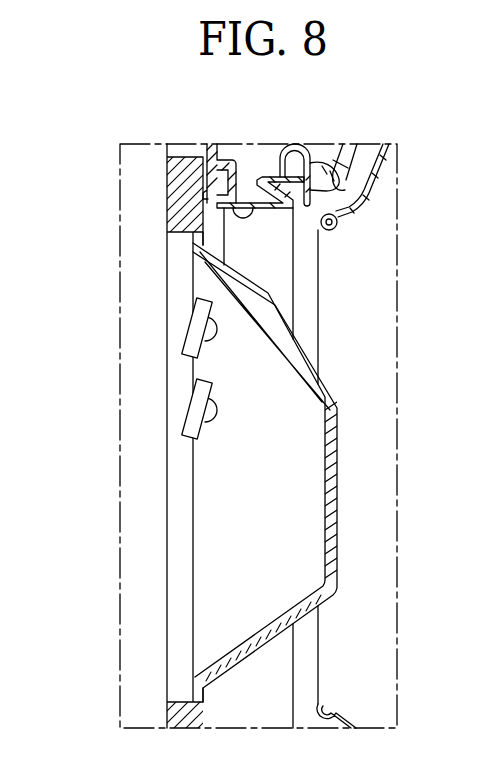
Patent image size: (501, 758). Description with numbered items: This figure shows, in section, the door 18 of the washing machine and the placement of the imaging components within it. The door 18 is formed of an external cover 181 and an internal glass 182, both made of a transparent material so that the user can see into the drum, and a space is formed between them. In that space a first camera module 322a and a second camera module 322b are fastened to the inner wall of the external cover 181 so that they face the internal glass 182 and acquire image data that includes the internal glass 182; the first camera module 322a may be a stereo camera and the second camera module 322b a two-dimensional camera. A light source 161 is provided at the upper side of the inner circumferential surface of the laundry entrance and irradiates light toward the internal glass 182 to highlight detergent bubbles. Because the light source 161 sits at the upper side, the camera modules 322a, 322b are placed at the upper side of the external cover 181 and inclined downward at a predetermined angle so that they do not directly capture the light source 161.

The light source 161 is at (247, 211).
The door 18 is at (174, 437).
The external cover 181 is at (170, 498).
The internal glass 182 is at (325, 559).
The first camera module 322a is at (190, 327).
The second camera module 322b is at (190, 410).